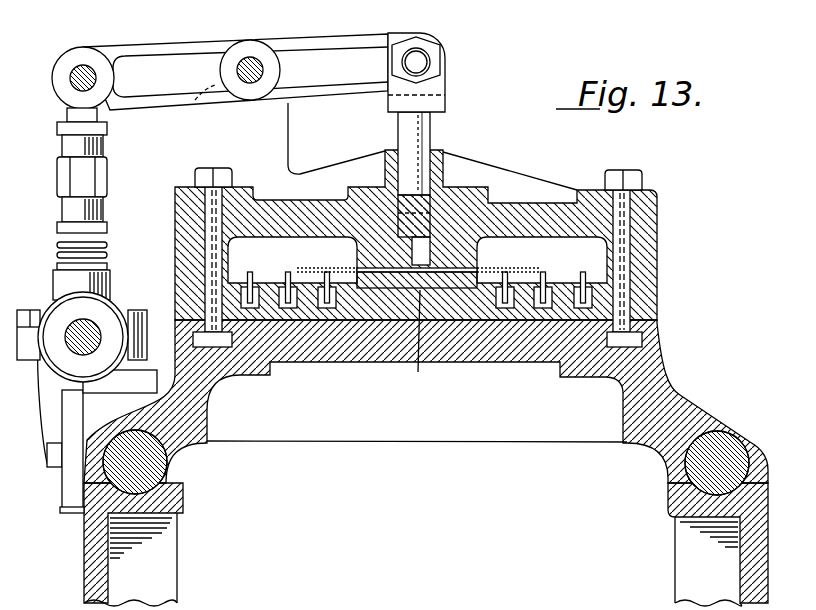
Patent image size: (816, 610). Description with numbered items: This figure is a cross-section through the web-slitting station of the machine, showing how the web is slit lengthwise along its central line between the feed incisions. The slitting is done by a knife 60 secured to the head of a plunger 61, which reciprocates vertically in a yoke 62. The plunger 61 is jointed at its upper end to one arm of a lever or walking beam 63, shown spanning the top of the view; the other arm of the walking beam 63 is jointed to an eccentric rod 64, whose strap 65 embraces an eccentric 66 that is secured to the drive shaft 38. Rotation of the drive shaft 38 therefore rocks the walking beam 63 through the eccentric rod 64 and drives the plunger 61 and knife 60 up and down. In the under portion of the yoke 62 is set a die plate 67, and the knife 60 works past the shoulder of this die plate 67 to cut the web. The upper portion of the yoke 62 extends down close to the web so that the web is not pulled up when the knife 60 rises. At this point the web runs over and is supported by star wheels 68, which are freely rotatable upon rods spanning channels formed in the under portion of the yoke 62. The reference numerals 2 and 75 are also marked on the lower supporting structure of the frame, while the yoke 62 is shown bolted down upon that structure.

The ball 2 is at (168, 468).
The drive shaft 38 is at (101, 327).
The knife 60 is at (472, 256).
The plunger 61 is at (427, 130).
The yoke 62 is at (540, 210).
The lever or walking beam 63 is at (362, 40).
The eccentric rod 64 is at (104, 175).
The strap 65 is at (108, 292).
The eccentric 66 is at (54, 323).
The die plate 67 is at (419, 345).
The star wheels 68 is at (289, 273).
The ring 75 is at (413, 525).